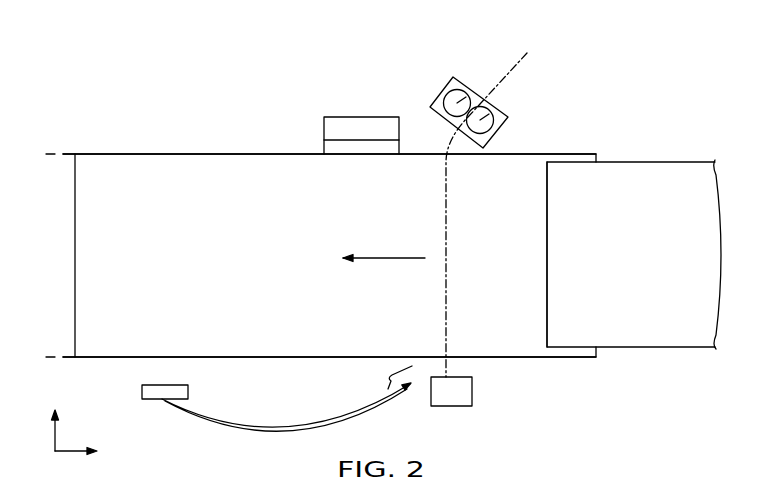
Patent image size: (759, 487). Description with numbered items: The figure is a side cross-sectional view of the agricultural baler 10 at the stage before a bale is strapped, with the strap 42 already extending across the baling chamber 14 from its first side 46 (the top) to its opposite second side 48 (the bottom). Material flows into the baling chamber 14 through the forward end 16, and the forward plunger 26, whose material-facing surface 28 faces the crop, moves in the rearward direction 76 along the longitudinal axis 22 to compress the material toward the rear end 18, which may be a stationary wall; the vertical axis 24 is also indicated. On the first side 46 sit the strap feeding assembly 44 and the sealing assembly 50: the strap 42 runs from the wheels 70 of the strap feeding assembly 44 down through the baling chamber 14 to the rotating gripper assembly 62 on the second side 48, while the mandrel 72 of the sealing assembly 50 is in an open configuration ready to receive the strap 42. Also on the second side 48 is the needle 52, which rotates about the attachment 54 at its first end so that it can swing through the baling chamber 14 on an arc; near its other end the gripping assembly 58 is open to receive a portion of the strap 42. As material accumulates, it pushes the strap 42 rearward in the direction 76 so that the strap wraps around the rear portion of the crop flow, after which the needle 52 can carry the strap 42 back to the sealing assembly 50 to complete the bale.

The agricultural baler 10 is at (66, 133).
The baling chamber 14 is at (238, 270).
The forward end 16 is at (606, 147).
The rear end 18 is at (63, 229).
The longitudinal axis 22 is at (70, 450).
The vertical axis 24 is at (52, 436).
The forward plunger 26 is at (672, 172).
The material-facing surface 28 is at (547, 255).
The strap 42 is at (513, 73).
The strap feeding assembly 44 is at (452, 82).
The first side 46 is at (193, 152).
The second side 48 is at (125, 358).
The sealing assembly 50 is at (360, 125).
The needle 52 is at (287, 435).
The attachment 54 is at (165, 385).
The gripping assembly 58 is at (415, 384).
The rotating gripper assembly 62 is at (473, 392).
The wheels 70 is at (478, 100).
The mandrel 72 is at (332, 147).
The rearward direction 76 is at (388, 258).